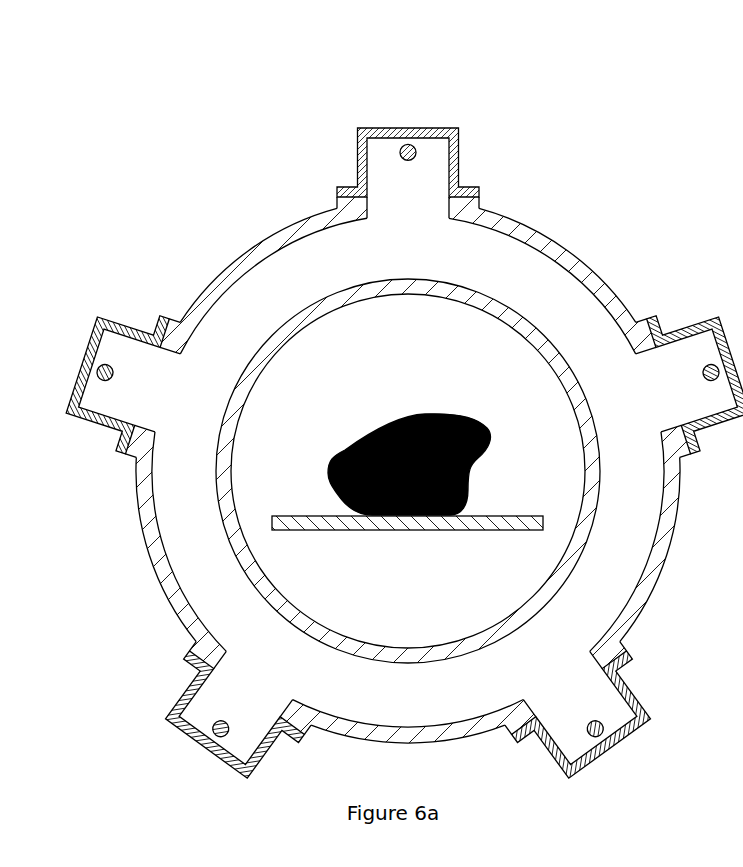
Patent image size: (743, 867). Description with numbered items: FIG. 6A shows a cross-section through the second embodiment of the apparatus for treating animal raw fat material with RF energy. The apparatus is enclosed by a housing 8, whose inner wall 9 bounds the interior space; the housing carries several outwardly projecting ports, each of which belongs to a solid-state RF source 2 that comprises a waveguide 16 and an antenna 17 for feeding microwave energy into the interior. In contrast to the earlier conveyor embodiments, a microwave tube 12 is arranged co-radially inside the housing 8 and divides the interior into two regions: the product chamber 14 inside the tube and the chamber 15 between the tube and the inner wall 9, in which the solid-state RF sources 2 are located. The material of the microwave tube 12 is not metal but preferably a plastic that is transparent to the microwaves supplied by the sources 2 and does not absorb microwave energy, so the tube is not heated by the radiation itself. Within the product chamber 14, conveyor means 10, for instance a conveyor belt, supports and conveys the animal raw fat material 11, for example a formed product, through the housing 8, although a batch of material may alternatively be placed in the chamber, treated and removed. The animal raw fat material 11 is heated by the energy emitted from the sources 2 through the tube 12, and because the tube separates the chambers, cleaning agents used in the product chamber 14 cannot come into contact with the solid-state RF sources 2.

The solid-state RF source 2 is at (337, 128).
The housing 8 is at (198, 317).
The inner wall 9 is at (235, 282).
The conveyor means 10 is at (327, 523).
The animal raw fat material 11 is at (457, 413).
The microwave tube 12 is at (542, 337).
The product chamber 14 is at (498, 360).
The chamber 15 is at (602, 337).
The waveguide 16 is at (372, 135).
The antenna 17 is at (408, 155).